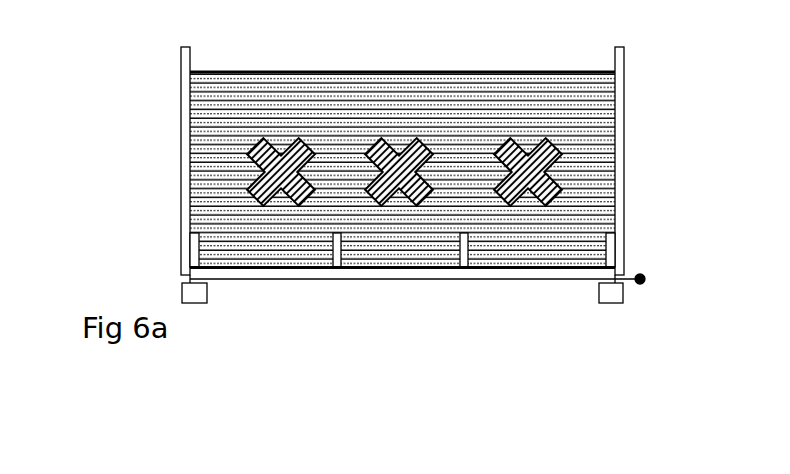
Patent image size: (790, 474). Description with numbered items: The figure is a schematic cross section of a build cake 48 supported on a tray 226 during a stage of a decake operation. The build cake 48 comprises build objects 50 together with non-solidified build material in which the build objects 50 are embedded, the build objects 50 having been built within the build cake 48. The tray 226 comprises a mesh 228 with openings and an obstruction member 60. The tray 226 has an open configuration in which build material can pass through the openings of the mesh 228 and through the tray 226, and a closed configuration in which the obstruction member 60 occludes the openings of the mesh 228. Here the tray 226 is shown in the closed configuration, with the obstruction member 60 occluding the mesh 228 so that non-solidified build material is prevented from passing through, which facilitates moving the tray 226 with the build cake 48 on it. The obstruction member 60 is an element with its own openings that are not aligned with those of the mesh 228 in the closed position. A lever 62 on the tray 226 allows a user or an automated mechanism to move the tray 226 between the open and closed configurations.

The build cake 48 is at (190, 113).
The build objects 50 is at (500, 153).
The tray 226 is at (157, 275).
The mesh 228 is at (428, 270).
The obstruction member 60 is at (538, 283).
The lever 62 is at (644, 276).